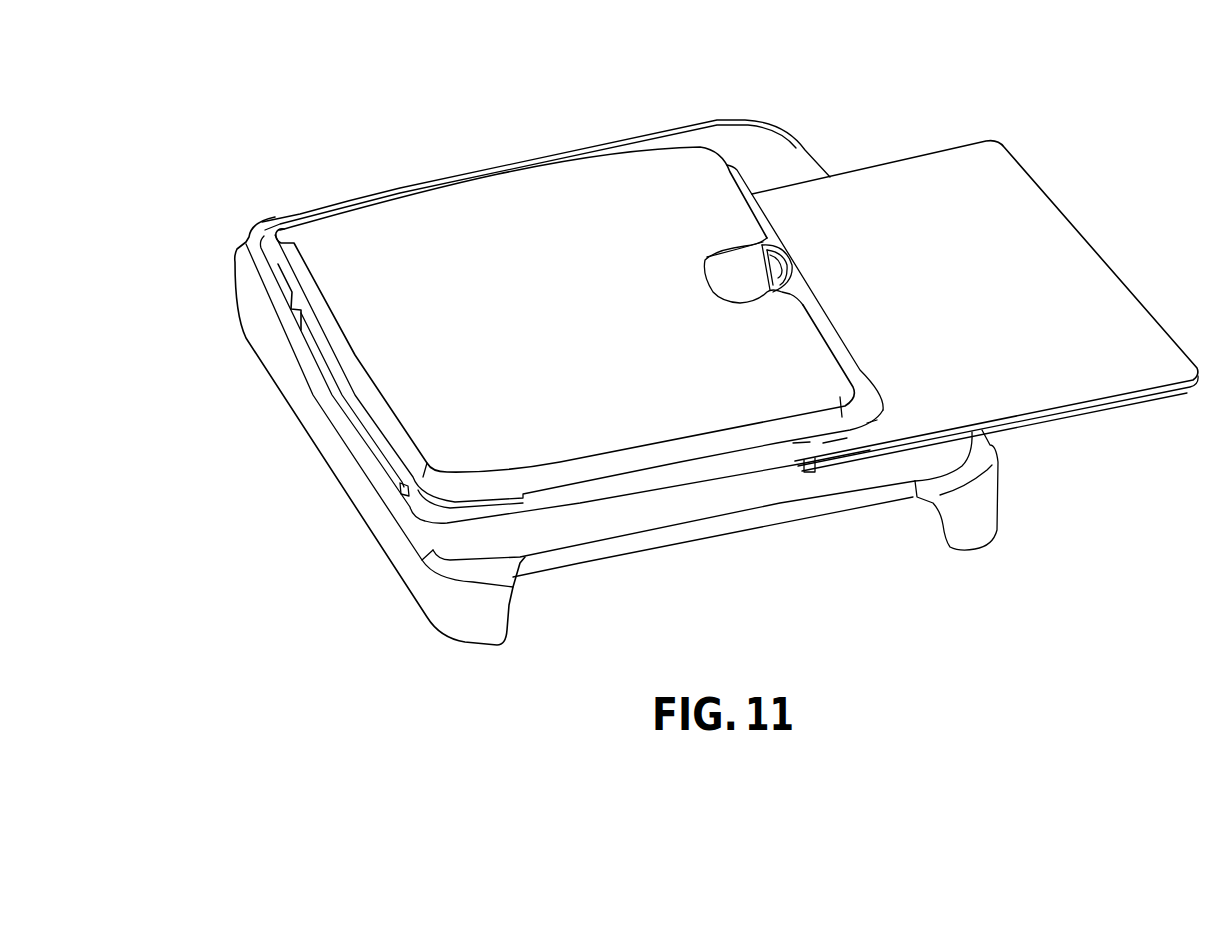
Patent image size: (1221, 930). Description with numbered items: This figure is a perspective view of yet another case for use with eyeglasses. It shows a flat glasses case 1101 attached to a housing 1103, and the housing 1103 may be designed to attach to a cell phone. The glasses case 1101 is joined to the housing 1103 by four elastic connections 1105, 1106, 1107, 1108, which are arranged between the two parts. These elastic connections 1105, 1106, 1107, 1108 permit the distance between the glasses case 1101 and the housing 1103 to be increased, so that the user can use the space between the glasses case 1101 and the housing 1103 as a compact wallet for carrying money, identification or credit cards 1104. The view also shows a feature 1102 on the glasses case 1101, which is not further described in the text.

The flat glasses case 1101 is at (582, 200).
The pull handle 1102 is at (783, 250).
The housing 1103 is at (967, 526).
The credit cards 1104 is at (1000, 410).
The elastic connection 1105 is at (809, 472).
The elastic connection 1106 is at (400, 492).
The elastic connection 1107 is at (300, 310).
The elastic connection 1108 is at (648, 152).